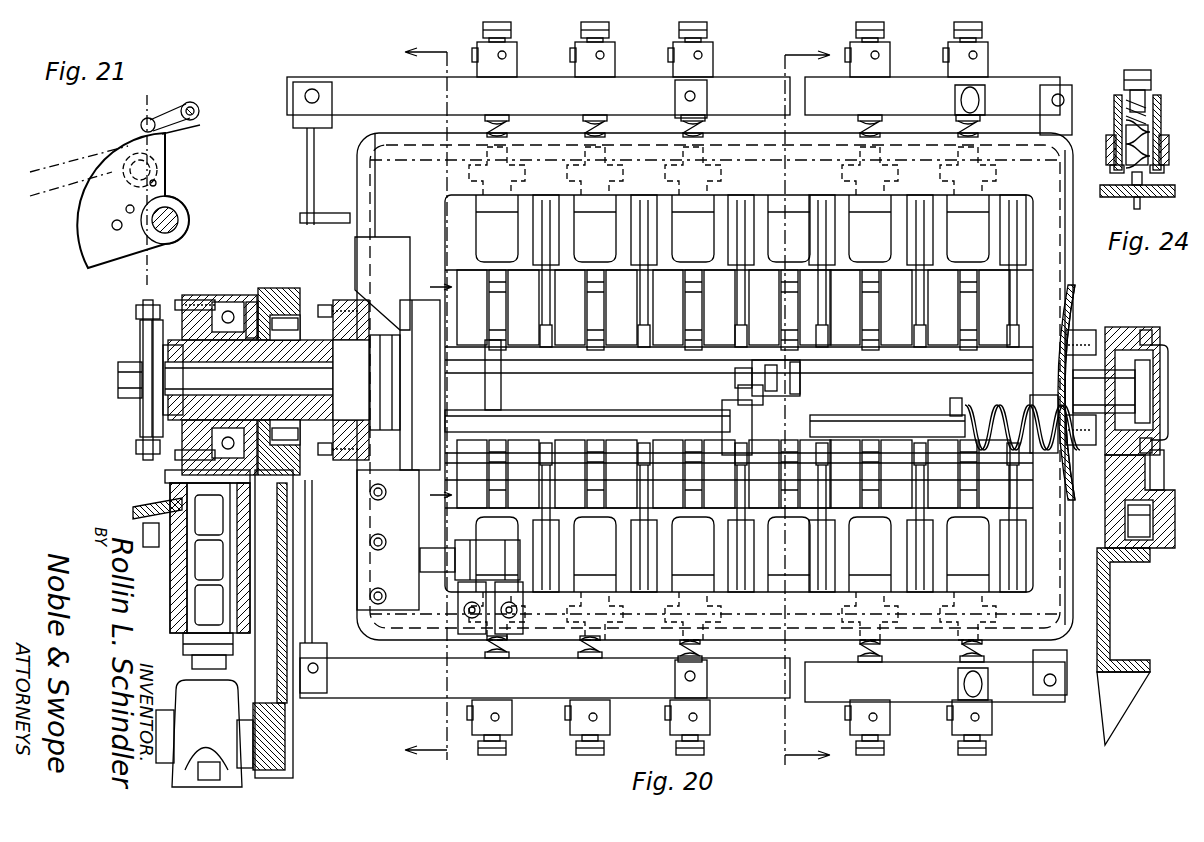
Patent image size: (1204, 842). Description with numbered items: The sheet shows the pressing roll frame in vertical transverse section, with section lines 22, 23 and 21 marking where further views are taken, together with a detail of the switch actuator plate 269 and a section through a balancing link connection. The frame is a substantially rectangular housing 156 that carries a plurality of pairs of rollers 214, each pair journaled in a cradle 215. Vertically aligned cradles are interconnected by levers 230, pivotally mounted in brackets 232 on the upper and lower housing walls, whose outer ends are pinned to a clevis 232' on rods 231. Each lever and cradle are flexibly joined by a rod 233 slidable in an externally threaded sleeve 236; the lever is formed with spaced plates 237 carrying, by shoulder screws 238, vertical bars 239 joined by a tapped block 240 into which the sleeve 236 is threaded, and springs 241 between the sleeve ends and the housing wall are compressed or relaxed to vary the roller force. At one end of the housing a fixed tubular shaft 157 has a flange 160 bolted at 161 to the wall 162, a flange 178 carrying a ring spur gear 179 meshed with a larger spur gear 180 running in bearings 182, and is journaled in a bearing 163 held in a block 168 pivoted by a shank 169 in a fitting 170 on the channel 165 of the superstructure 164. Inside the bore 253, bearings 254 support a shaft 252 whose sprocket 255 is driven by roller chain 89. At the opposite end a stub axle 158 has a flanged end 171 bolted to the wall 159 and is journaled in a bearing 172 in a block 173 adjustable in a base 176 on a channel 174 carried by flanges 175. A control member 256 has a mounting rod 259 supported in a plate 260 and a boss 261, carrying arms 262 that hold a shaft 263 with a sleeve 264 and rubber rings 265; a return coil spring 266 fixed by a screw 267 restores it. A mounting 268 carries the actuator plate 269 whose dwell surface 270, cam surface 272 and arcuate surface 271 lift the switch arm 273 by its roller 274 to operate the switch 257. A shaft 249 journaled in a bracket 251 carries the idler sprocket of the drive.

In FIG. 20, the section line 22— 22 is at (440, 48).
In FIG. 20, the section line 23— 23 is at (828, 48).
In FIG. 20, the section line 21— 21 is at (444, 278).
In FIG. 20, the levers 230 is at (352, 90).
In FIG. 20, the brackets 232 is at (841, 389).
In FIG. 20, the clevis 232' is at (289, 401).
In FIG. 20, the rods 231 is at (306, 176).
In FIG. 20, the bars 239 is at (512, 708).
In FIG. 24, the bars 239 is at (1114, 104).
In FIG. 20, the externally threaded sleeve 236 is at (498, 752).
In FIG. 24, the externally threaded sleeve 236 is at (1145, 78).
In FIG. 20, the springs 241 is at (580, 652).
In FIG. 24, the springs 241 is at (1160, 134).
In FIG. 20, the housing 156 is at (390, 160).
In FIG. 20, the switch 257 is at (384, 250).
In FIG. 20, the plate 260 is at (412, 575).
In FIG. 20, the cradle 215 is at (585, 245).
In FIG. 20, the rollers 214 is at (522, 300).
In FIG. 20, the mounting rod 259 is at (558, 432).
In FIG. 21, the mounting rod 259 is at (180, 226).
In FIG. 20, the control member 256 is at (612, 408).
In FIG. 21, the control member 256 is at (125, 165).
In FIG. 20, the arms 262 is at (722, 412).
In FIG. 20, the shaft 263 is at (770, 365).
In FIG. 20, the sleeve 264 is at (800, 372).
In FIG. 20, the rubber rings 265 is at (736, 380).
In FIG. 20, the return coil spring 266 is at (990, 402).
In FIG. 20, the screw 267 is at (956, 398).
In FIG. 20, the boss 261 is at (1030, 440).
In FIG. 20, the mounting 268 is at (498, 412).
In FIG. 21, the mounting 268 is at (165, 188).
In FIG. 20, the shaft 249 is at (462, 552).
In FIG. 20, the bracket 251 is at (505, 585).
In FIG. 20, the tubular shaft 157 is at (232, 345).
In FIG. 20, the bearing 163 is at (200, 300).
In FIG. 20, the block 168 is at (218, 300).
In FIG. 20, the ring spur gear 179 is at (280, 288).
In FIG. 20, the flange 178 is at (300, 330).
In FIG. 20, the flange 160 is at (338, 300).
In FIG. 20, the bolts 161 is at (322, 308).
In FIG. 20, the wall 162 is at (368, 318).
In FIG. 20, the bore 253 is at (340, 400).
In FIG. 20, the bearings 254 is at (135, 358).
In FIG. 20, the spur gear 180 is at (380, 480).
In FIG. 20, the sprocket 255 is at (140, 345).
In FIG. 20, the roller chain 89 is at (142, 312).
In FIG. 20, the shaft 252 is at (130, 392).
In FIG. 20, the channel 165 is at (140, 505).
In FIG. 20, the superstructure 164 is at (170, 510).
In FIG. 20, the shank 169 is at (209, 600).
In FIG. 20, the fitting 170 is at (232, 618).
In FIG. 20, the bearings 182 is at (210, 722).
In FIG. 20, the wall 159 is at (1070, 320).
In FIG. 20, the flanged end 171 is at (1090, 345).
In FIG. 20, the stub axle 158 is at (1120, 385).
In FIG. 20, the bearing 172 is at (1148, 330).
In FIG. 20, the block 173 is at (1140, 462).
In FIG. 20, the base 176 is at (1142, 500).
In FIG. 20, the channel 174 is at (1112, 580).
In FIG. 20, the flanges 175 is at (1110, 680).
In FIG. 21, the arcuate surface 271 is at (73, 223).
In FIG. 21, the switch actuator plate 269 is at (162, 172).
In FIG. 21, the rise or cam surface 272 is at (167, 150).
In FIG. 21, the switch arm 273 is at (185, 104).
In FIG. 21, the roller 274 is at (142, 121).
In FIG. 21, the arcuate surface 270 is at (196, 124).
In FIG. 24, the block 240 is at (1150, 100).
In FIG. 24, the shoulder screws 238 is at (1110, 135).
In FIG. 24, the plates 237 is at (1115, 165).
In FIG. 24, the rod 233 is at (1141, 204).